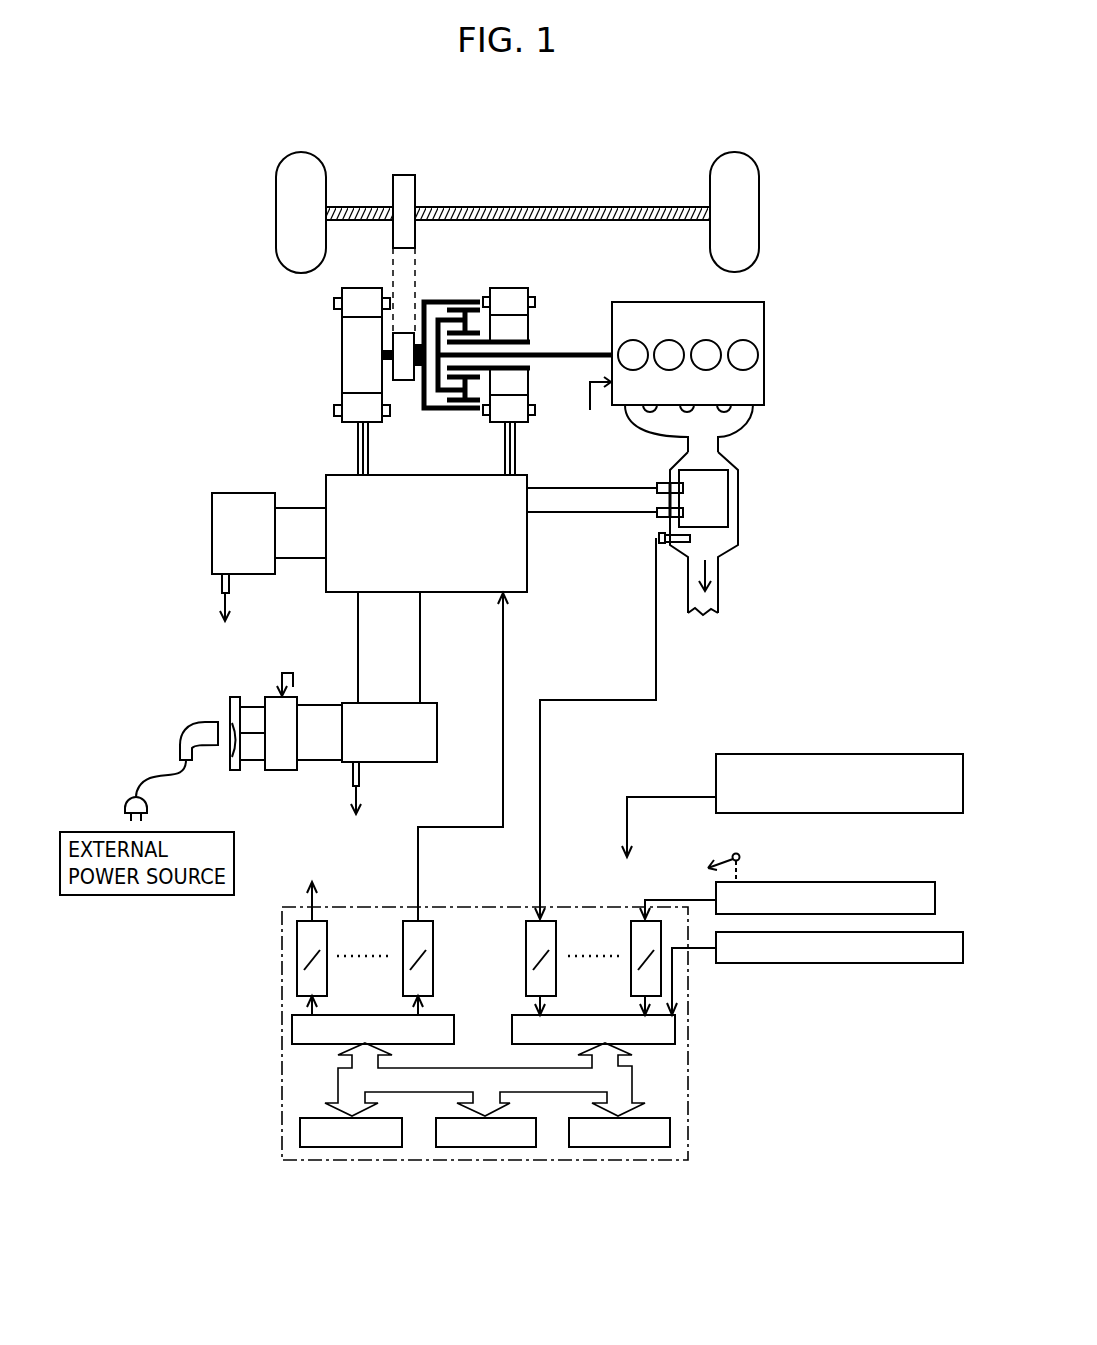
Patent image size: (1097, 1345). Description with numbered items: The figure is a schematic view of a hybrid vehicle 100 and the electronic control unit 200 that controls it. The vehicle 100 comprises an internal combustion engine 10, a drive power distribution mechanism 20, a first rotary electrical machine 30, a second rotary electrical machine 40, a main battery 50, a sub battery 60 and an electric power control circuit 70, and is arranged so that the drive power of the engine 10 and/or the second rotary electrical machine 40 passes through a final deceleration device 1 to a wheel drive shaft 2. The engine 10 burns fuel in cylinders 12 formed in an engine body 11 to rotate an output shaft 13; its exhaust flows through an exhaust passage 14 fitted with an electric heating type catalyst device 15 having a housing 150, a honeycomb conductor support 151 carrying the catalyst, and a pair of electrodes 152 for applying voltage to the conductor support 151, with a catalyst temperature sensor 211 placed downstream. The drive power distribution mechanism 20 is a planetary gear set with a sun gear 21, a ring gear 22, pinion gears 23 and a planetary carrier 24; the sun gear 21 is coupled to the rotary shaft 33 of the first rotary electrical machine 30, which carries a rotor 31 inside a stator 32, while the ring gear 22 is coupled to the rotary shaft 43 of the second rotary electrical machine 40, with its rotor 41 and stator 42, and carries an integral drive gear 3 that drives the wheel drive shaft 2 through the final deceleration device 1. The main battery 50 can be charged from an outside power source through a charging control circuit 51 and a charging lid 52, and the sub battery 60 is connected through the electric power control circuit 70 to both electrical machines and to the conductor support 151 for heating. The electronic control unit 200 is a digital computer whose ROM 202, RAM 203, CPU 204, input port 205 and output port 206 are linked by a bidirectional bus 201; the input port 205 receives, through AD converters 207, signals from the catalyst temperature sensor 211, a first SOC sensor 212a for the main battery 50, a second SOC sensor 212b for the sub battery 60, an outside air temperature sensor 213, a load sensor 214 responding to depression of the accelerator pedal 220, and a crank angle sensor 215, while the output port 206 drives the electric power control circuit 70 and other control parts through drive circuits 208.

The vehicle 100 is at (258, 130).
The final deceleration device 1 is at (405, 175).
The wheel drive shaft 2 is at (338, 207).
The drive gear 3 is at (400, 382).
The internal combustion engine 10 is at (719, 338).
The engine body 11 is at (755, 330).
The cylinders 12 is at (750, 360).
The output shaft 13 is at (600, 353).
The exhaust passage 14 is at (725, 438).
The electric heating type catalyst device 15 is at (734, 510).
The drive power distribution mechanism 20 is at (515, 312).
The sun gear 21 is at (476, 338).
The ring gear 22 is at (425, 302).
The pinion gears 23 is at (465, 312).
The planetary carrier 24 is at (438, 320).
The first rotary electrical machine 30 is at (571, 356).
The rotor 31 is at (520, 326).
The stator 32 is at (522, 292).
The rotary shaft 33 is at (520, 342).
The second rotary electrical machine 40 is at (270, 323).
The rotor 41 is at (352, 370).
The stator 42 is at (352, 405).
The rotary shaft 43 is at (385, 352).
The main battery 50 is at (437, 742).
The charging control circuit 51 is at (283, 770).
The charging lid 52 is at (235, 770).
The sub battery 60 is at (212, 523).
The electric power control circuit 70 is at (527, 568).
The housing 150 is at (740, 505).
The conductor support 151 is at (728, 478).
The electrodes 152 is at (660, 486).
The electronic control unit 200 is at (455, 907).
The bidirectional bus 201 is at (633, 1082).
The ROM 202 is at (362, 1147).
The RAM 203 is at (510, 1147).
The CPU 204 is at (650, 1147).
The input port 205 is at (525, 1015).
The output port 206 is at (442, 1015).
The AD converters 207 is at (631, 921).
The drive circuits 208 is at (403, 921).
The catalyst temperature sensor 211 is at (658, 575).
The first SOC sensor 212a is at (360, 775).
The second SOC sensor 212b is at (222, 582).
The outside air temperature sensor 213 is at (772, 813).
The load sensor 214 is at (848, 882).
The crank angle sensor 215 is at (920, 932).
The accelerator pedal 220 is at (730, 856).